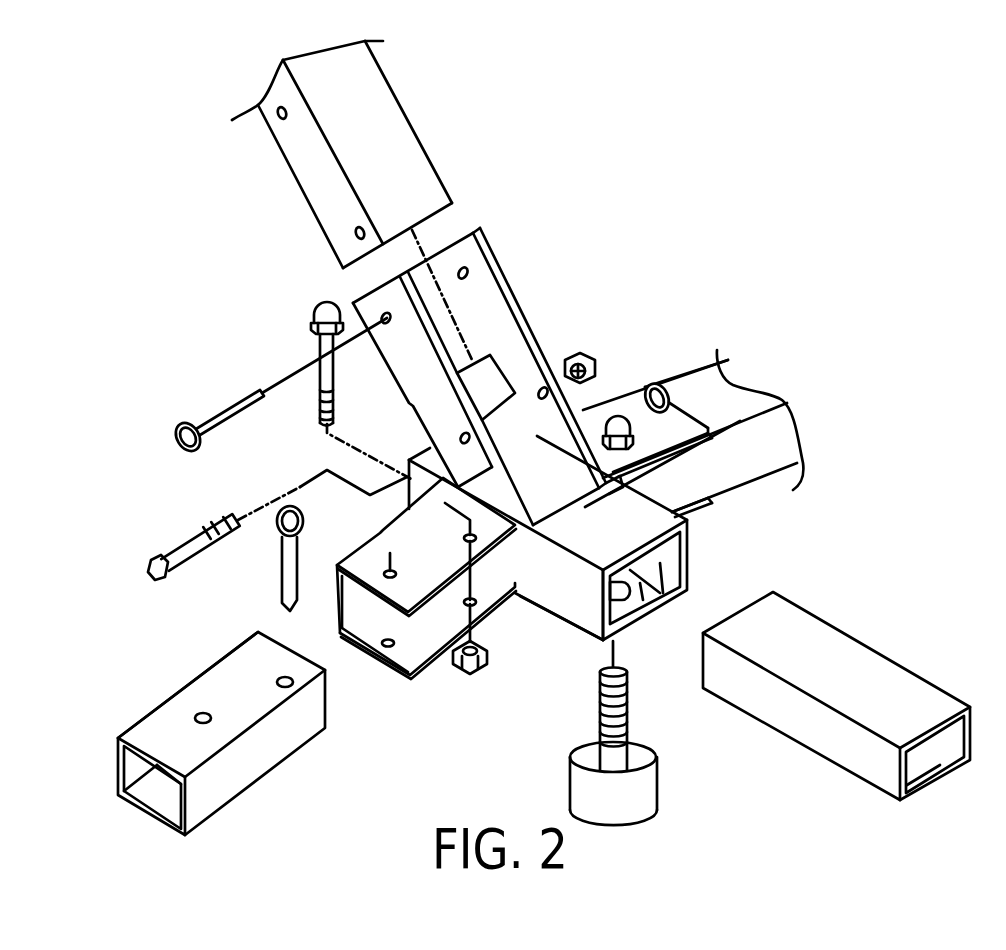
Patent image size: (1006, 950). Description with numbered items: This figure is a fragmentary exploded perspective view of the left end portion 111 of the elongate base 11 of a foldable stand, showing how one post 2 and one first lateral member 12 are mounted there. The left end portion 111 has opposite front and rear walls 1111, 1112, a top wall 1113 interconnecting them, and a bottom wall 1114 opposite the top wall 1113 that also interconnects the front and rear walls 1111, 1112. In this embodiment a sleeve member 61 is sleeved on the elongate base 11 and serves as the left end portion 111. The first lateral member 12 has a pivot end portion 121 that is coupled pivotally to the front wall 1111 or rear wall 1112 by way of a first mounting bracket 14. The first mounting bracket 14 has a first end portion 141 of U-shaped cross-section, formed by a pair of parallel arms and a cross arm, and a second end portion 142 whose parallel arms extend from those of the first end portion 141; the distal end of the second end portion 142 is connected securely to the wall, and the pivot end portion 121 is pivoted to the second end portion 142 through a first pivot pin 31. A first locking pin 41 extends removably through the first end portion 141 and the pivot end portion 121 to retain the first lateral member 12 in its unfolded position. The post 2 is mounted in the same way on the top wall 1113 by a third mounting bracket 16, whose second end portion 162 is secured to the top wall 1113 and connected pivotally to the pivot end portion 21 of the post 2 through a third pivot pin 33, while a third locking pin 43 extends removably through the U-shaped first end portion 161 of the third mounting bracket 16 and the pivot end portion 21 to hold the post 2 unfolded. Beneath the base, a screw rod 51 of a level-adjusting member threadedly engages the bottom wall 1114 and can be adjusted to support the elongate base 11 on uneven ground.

The post 2 is at (378, 109).
The pivot end portion of post 21 is at (398, 148).
The third mounting bracket 16 is at (454, 232).
The first end portion of third mounting bracket 161 is at (503, 330).
The second end portion of third mounting bracket 162 is at (510, 402).
The first locking pin 41 is at (657, 383).
The pivot end portion of first lateral member 121 is at (720, 395).
The first mounting bracket 14 is at (684, 425).
The first lateral member 12 is at (771, 393).
The first pivot pin 31 is at (322, 315).
The sleeve member 61 is at (633, 488).
The top wall 1113 is at (620, 525).
The left end portion of elongate base 111 is at (700, 567).
The elongate base 11 is at (885, 682).
The third locking pin 43 is at (237, 405).
The third pivot pin 33 is at (152, 563).
The first end portion of first mounting bracket 141 is at (420, 637).
The second end portion of first mounting bracket 142 is at (492, 527).
The front wall 1111 is at (557, 600).
The bottom wall 1114 is at (637, 580).
The rear wall 1112 is at (650, 580).
The screw rod 51 is at (632, 808).